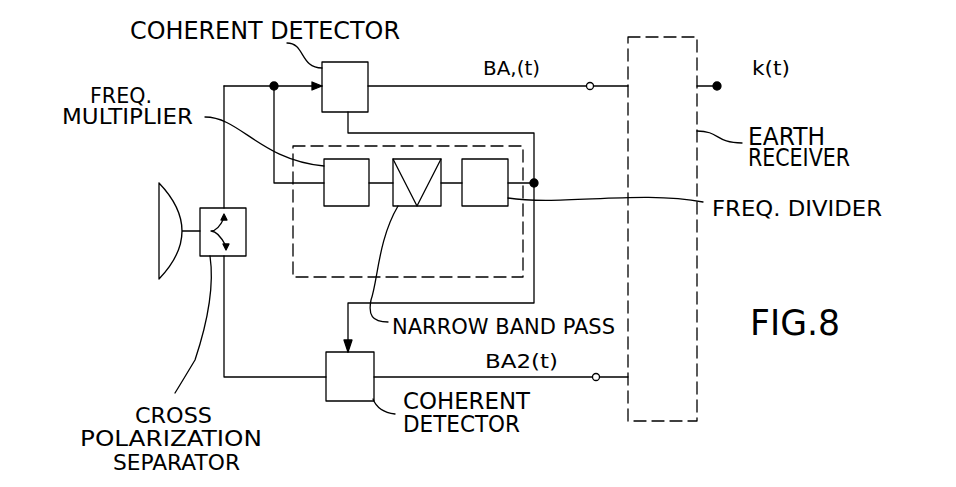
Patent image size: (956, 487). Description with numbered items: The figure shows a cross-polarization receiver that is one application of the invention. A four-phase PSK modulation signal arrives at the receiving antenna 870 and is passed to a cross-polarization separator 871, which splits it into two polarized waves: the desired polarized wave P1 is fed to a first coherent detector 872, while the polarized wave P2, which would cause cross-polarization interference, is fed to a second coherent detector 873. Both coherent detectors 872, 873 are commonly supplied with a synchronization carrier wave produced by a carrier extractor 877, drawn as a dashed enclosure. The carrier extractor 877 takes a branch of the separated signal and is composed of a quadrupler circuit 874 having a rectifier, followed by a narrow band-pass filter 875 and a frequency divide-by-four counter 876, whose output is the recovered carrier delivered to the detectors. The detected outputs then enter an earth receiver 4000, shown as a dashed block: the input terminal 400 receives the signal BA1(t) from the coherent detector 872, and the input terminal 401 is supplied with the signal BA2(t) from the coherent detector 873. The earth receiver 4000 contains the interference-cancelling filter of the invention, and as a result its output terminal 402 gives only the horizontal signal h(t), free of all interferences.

The receiving antenna 870 is at (160, 279).
The cross-polarization separator 871 is at (237, 256).
The coherent detector 872 is at (360, 112).
The coherent detector 873 is at (350, 401).
The quadrupler circuit 874 is at (352, 206).
The narrow band-pass filter 875 is at (424, 206).
The frequency divide-by-four counter 876 is at (487, 206).
The carrier extractor 877 is at (300, 279).
The input terminal 400 is at (590, 90).
The input terminal 401 is at (596, 381).
The output terminal 402 is at (721, 86).
The earth receiver 4000 is at (688, 421).